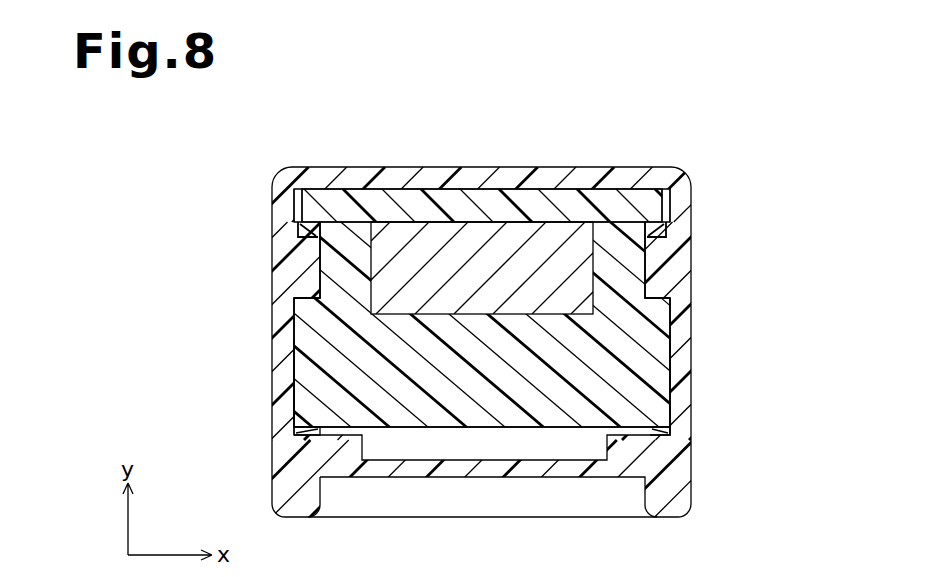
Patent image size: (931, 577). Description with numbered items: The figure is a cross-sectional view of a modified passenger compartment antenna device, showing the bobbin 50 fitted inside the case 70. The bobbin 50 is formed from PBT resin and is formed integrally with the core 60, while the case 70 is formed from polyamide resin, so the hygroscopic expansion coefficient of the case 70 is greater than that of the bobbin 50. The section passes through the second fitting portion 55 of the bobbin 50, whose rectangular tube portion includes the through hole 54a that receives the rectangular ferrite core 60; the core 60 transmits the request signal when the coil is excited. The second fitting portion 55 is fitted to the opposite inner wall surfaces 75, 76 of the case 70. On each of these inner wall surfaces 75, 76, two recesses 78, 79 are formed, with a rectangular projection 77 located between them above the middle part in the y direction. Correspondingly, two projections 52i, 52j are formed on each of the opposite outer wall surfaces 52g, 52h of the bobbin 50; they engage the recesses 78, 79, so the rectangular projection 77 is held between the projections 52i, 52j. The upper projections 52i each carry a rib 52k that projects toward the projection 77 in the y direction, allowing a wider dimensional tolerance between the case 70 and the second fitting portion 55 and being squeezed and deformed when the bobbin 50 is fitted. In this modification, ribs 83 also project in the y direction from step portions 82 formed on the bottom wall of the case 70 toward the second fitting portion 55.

The case 70 is at (592, 167).
The step portions 82 is at (332, 448).
The bobbin 50 is at (482, 172).
The second fitting portion 55 is at (453, 198).
The through hole 54a is at (510, 228).
The inner wall surface 76 is at (645, 358).
The inner wall surface 75 is at (322, 359).
The core 60 is at (412, 232).
The rectangular projection 77 is at (304, 289).
The recess 78 is at (298, 200).
The projection 52i is at (773, 203).
The rib 52k is at (298, 235).
The recess 79 is at (293, 342).
The projection 52j is at (293, 382).
The outer wall surface 52g is at (290, 407).
The outer wall surface 52h is at (675, 408).
The ribs 83 is at (300, 434).